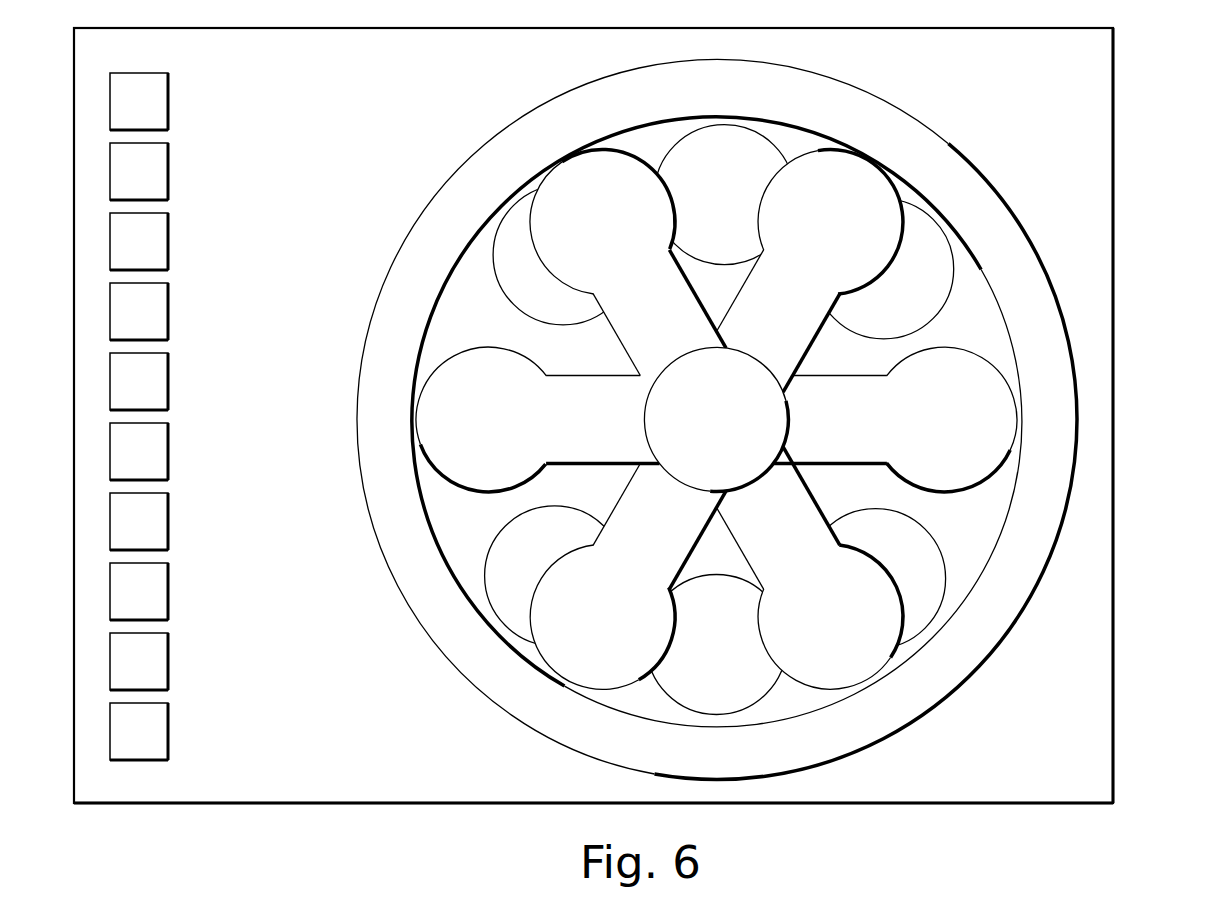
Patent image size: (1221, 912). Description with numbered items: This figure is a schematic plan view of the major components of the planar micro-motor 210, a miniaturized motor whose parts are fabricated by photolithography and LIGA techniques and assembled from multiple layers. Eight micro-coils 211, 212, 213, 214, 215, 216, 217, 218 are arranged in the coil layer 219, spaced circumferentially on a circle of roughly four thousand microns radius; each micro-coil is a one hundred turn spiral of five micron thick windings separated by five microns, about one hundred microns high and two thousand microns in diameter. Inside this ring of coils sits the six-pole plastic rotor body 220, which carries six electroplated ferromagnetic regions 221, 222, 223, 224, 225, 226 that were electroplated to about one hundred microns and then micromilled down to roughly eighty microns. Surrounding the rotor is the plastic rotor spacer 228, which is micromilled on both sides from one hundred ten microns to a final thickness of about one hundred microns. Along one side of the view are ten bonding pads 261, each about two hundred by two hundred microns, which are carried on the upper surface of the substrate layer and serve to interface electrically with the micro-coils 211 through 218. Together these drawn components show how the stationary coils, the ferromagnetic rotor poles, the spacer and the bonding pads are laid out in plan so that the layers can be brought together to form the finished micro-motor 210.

The planar micro-motor 210 is at (1116, 412).
The micro-coil 211 is at (702, 205).
The micro-coil 212 is at (898, 294).
The micro-coil 213 is at (893, 475).
The micro-coil 214 is at (878, 555).
The micro-coil 215 is at (695, 615).
The micro-coil 216 is at (494, 588).
The micro-coil 217 is at (441, 474).
The micro-coil 218 is at (513, 305).
The coil layer 219 is at (450, 330).
The six-pole plastic rotor body 220 is at (813, 435).
The electroplated ferromagnetic region 221 is at (925, 438).
The electroplated ferromagnetic region 222 is at (814, 627).
The electroplated ferromagnetic region 223 is at (593, 630).
The electroplated ferromagnetic region 224 is at (470, 430).
The electroplated ferromagnetic region 225 is at (588, 242).
The electroplated ferromagnetic region 226 is at (809, 240).
The plastic rotor spacer 228 is at (895, 167).
The bonding pads 261 is at (119, 120).